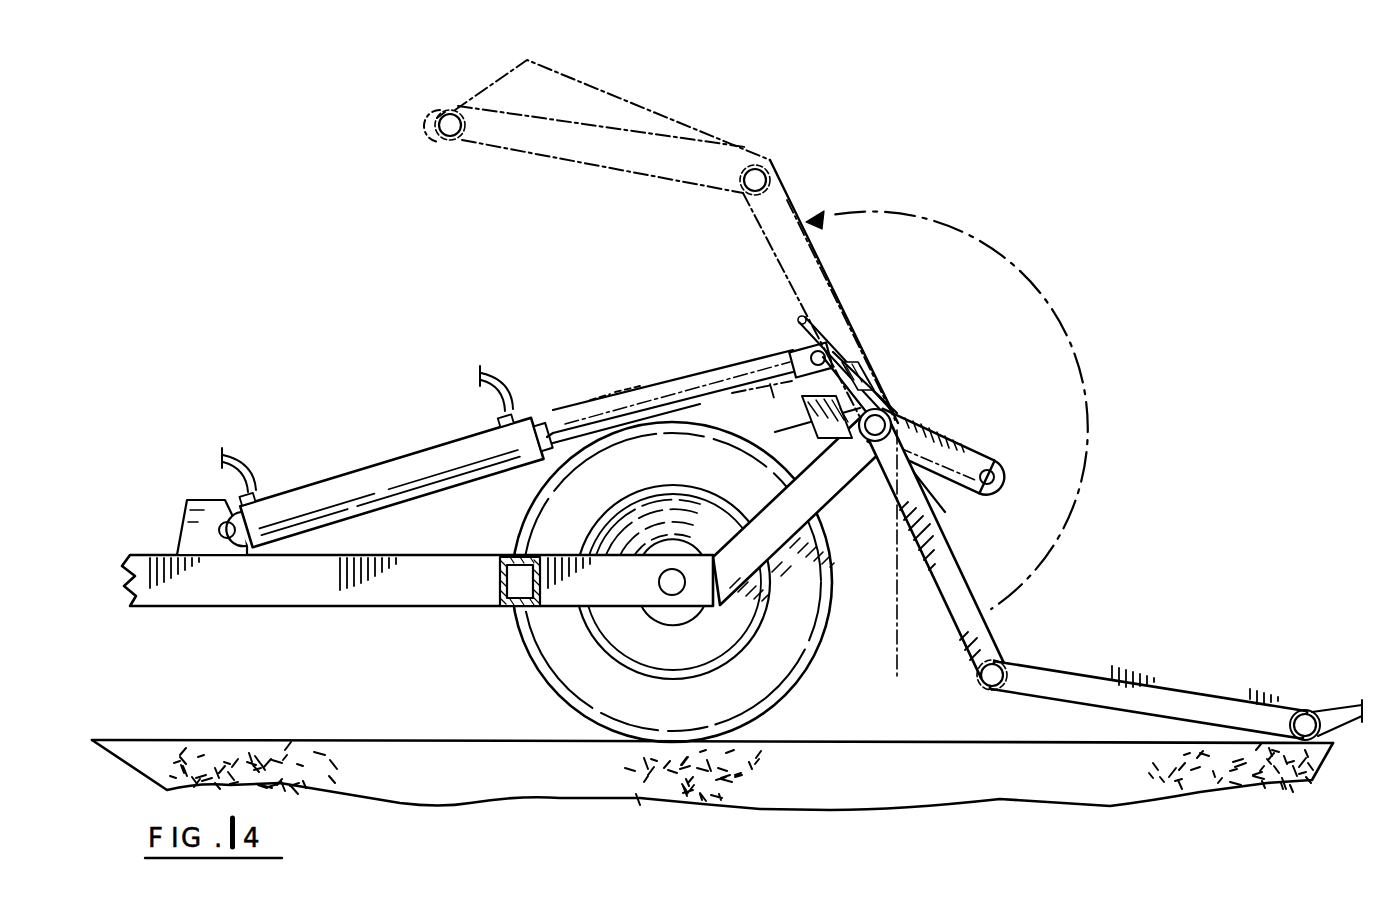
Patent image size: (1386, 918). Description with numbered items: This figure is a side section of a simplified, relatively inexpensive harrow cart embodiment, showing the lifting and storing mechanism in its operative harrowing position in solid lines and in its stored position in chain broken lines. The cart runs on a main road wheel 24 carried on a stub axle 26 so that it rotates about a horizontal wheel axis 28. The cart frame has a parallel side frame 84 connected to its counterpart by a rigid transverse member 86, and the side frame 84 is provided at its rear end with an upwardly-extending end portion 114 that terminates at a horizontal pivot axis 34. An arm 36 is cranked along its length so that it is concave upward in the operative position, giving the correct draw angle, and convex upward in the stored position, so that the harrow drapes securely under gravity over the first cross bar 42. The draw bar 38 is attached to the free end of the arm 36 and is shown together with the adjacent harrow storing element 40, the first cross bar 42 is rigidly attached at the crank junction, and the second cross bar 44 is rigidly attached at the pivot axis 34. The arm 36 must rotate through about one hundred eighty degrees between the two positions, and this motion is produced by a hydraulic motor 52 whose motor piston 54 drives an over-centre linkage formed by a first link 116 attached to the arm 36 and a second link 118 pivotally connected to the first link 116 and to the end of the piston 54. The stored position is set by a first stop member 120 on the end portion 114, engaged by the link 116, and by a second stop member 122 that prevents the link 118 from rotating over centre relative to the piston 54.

The road wheel 24 is at (800, 663).
The stub axle 26 is at (673, 600).
The wheel axis 28 is at (657, 588).
The pivot axis 34 is at (917, 407).
The arm 36 is at (790, 287).
The draw bar 38 is at (452, 140).
The arm 40 is at (722, 130).
The first cross bar 42 is at (740, 197).
The second cross bar 44 is at (818, 470).
The hydraulic motor 52 is at (368, 462).
The motor piston 54 is at (687, 387).
The side frame 84 is at (315, 598).
The transverse member 86 is at (495, 577).
The end portion 114 is at (810, 532).
The first link 116 is at (790, 388).
The second link 118 is at (703, 373).
The first stop member 120 is at (770, 430).
The second stop member 122 is at (596, 395).